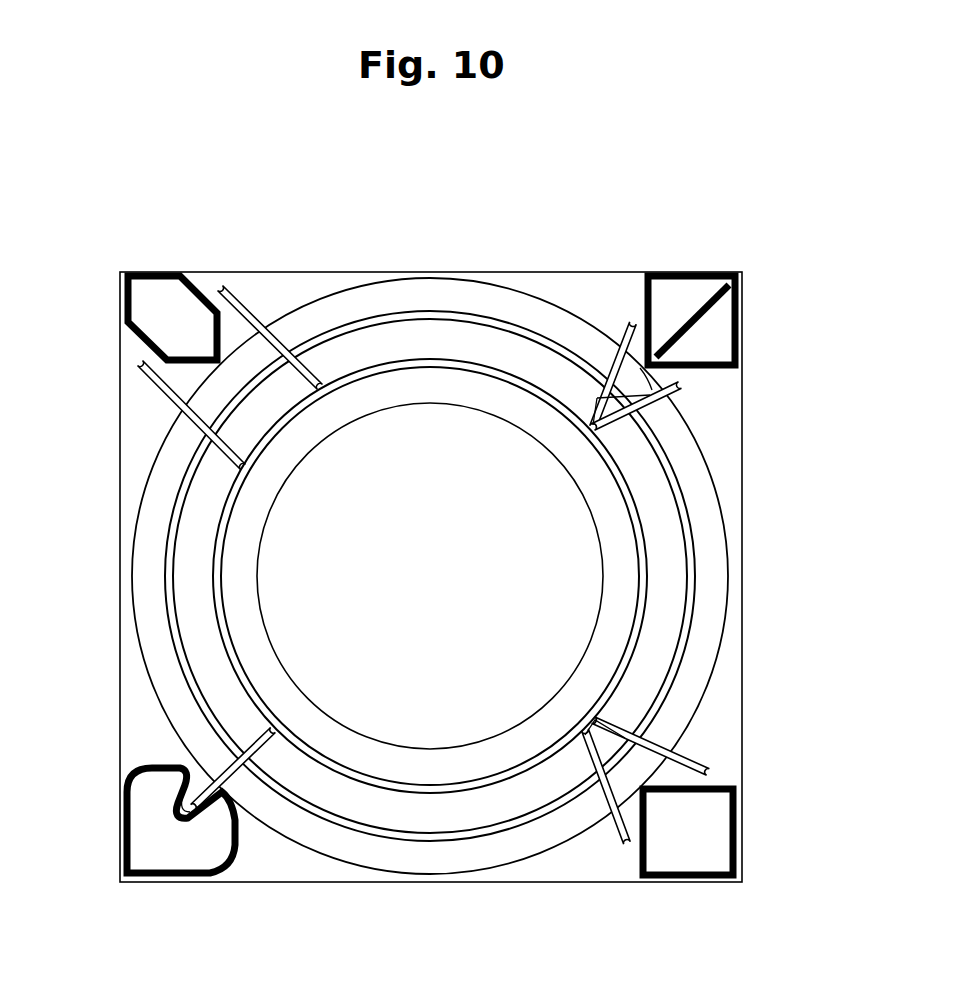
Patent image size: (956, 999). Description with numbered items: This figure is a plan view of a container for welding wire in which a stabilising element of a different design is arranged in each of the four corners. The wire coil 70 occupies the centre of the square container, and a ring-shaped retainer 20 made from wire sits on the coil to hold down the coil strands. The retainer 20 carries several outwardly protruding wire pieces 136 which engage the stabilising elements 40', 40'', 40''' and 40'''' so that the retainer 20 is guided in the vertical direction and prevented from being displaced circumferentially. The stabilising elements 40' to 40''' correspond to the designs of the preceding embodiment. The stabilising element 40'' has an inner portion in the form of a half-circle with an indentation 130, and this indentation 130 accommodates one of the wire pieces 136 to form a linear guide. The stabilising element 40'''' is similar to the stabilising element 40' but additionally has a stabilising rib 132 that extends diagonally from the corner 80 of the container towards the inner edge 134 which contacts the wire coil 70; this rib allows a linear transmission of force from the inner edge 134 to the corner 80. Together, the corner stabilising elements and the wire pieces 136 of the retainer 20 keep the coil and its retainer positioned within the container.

The retainer 20 is at (695, 585).
The wire coil 70 is at (433, 285).
The corner 80 is at (745, 272).
The indentation 130 is at (214, 775).
The stabilising rib 132 is at (700, 320).
The inner edge 134 is at (640, 368).
The wire pieces 136 is at (248, 297).
The stabilising element 40' is at (693, 874).
The stabilising element 40'' is at (181, 863).
The stabilising element 40''' is at (160, 270).
The stabilising element 40'''' is at (691, 275).